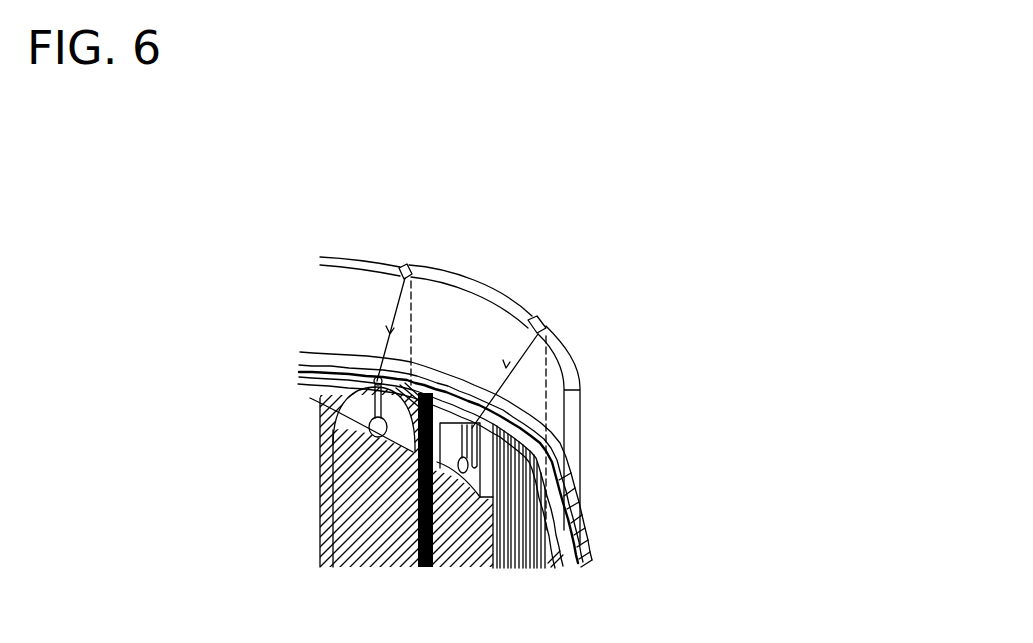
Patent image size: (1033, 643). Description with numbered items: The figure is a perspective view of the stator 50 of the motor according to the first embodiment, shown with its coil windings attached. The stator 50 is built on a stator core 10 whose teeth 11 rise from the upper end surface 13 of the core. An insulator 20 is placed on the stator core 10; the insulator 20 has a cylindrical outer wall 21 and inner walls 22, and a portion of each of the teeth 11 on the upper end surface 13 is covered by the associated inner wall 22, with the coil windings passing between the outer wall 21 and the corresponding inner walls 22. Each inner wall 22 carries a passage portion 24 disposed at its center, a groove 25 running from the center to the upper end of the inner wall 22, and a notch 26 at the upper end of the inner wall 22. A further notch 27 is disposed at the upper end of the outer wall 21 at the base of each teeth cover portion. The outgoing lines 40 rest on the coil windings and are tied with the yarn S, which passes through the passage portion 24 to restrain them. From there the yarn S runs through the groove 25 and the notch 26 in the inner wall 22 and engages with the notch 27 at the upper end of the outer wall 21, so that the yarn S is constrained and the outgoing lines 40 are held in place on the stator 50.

The stator core 10 is at (602, 548).
The teeth 11 is at (457, 530).
The upper end surface 13 is at (583, 508).
The insulator 20 is at (512, 284).
The outer wall 21 is at (473, 315).
The inner wall 22 is at (481, 450).
The passage portion 24 is at (333, 427).
The groove 25 is at (345, 406).
The notch 26 is at (376, 380).
The notch 27 is at (409, 258).
The outgoing lines 40 is at (313, 377).
The stator 50 is at (731, 127).
The yarn S is at (393, 314).